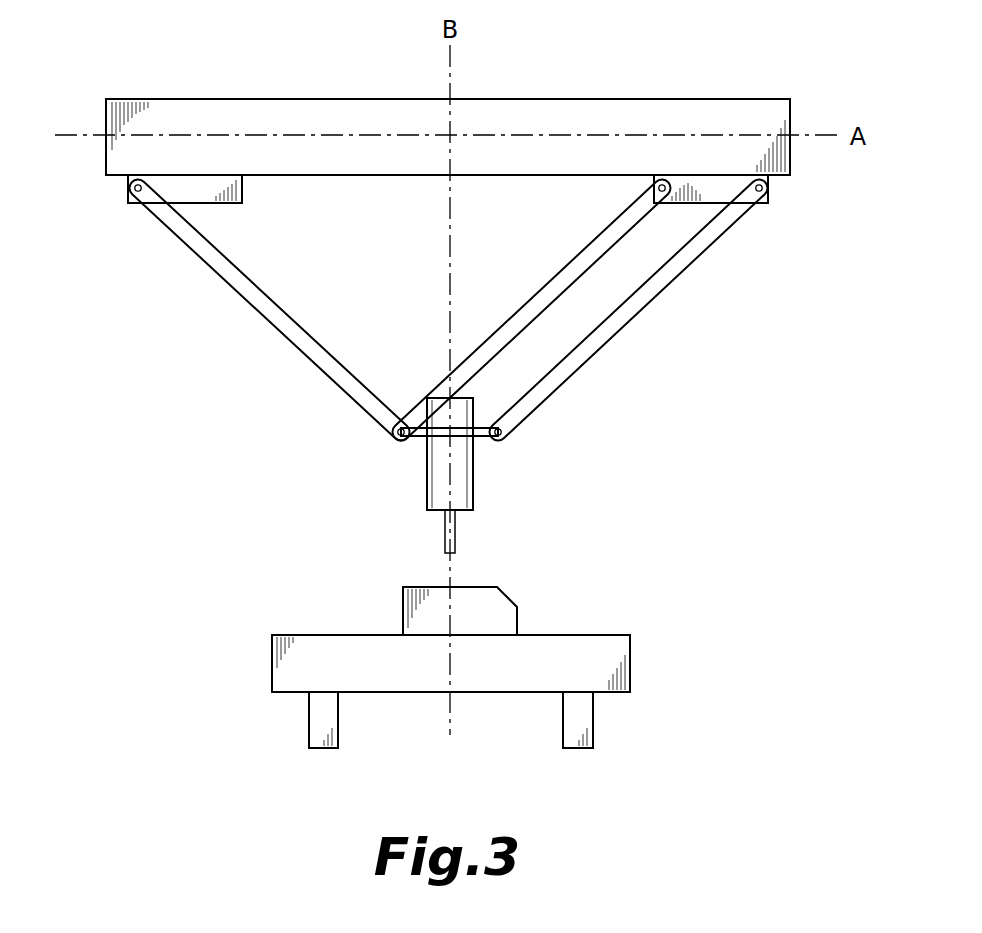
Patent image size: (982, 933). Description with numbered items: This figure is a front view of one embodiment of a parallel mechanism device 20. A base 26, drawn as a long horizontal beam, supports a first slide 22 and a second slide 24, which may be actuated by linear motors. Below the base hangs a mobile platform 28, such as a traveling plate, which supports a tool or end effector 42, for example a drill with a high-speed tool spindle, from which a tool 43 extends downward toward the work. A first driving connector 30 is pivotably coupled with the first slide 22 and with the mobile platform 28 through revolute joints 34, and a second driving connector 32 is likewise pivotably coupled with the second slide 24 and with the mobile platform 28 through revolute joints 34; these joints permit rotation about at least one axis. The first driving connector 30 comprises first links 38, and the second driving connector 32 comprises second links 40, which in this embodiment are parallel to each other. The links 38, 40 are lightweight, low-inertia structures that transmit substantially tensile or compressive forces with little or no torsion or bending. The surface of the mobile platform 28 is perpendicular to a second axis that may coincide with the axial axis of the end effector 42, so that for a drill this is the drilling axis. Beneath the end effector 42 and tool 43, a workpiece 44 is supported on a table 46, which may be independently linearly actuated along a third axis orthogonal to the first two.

The parallel mechanism device 20 is at (772, 350).
The first slide 22 is at (183, 192).
The second slide 24 is at (720, 190).
The base 26 is at (562, 108).
The mobile platform 28 is at (432, 440).
The first driving connector 30 is at (218, 297).
The second driving connector 32 is at (680, 316).
The revolute joints 34 is at (130, 187).
The first links 38 is at (307, 343).
The second links 40 is at (545, 313).
The end effector 42 is at (468, 485).
The tool 43 is at (432, 585).
The workpiece 44 is at (508, 620).
The table 46 is at (617, 647).